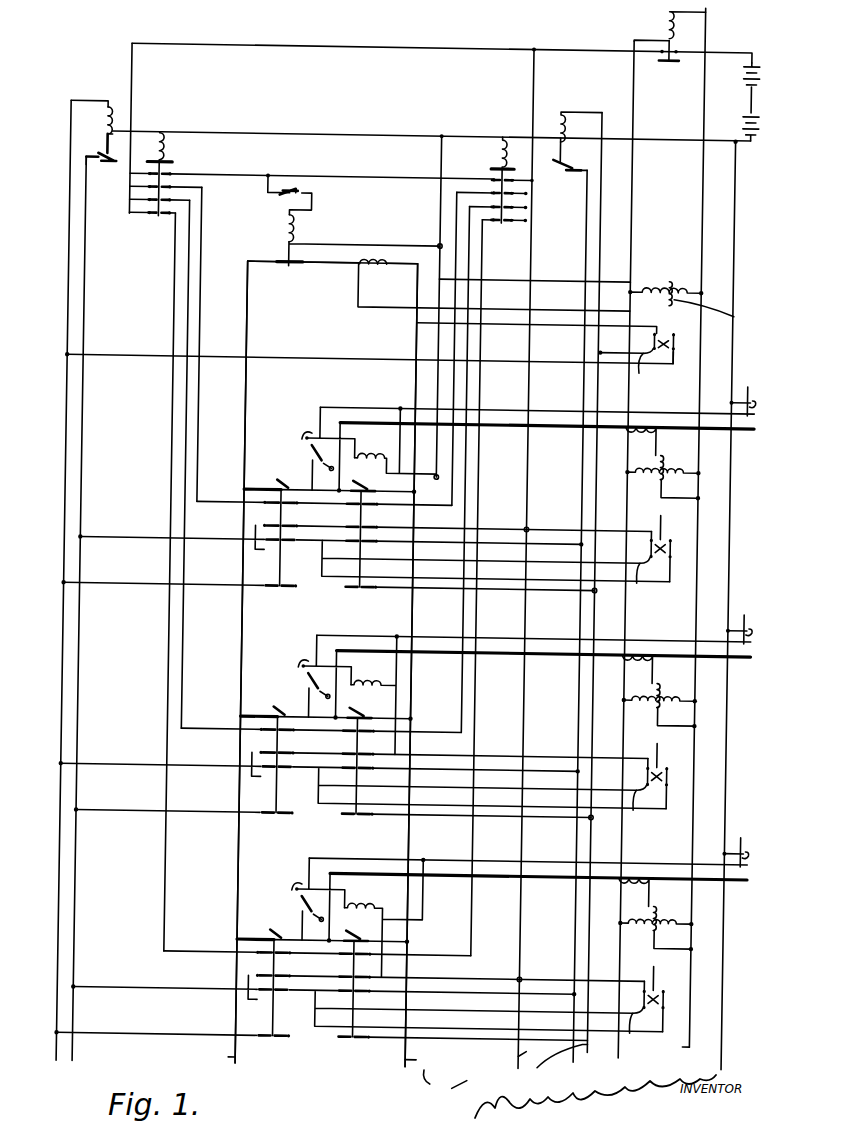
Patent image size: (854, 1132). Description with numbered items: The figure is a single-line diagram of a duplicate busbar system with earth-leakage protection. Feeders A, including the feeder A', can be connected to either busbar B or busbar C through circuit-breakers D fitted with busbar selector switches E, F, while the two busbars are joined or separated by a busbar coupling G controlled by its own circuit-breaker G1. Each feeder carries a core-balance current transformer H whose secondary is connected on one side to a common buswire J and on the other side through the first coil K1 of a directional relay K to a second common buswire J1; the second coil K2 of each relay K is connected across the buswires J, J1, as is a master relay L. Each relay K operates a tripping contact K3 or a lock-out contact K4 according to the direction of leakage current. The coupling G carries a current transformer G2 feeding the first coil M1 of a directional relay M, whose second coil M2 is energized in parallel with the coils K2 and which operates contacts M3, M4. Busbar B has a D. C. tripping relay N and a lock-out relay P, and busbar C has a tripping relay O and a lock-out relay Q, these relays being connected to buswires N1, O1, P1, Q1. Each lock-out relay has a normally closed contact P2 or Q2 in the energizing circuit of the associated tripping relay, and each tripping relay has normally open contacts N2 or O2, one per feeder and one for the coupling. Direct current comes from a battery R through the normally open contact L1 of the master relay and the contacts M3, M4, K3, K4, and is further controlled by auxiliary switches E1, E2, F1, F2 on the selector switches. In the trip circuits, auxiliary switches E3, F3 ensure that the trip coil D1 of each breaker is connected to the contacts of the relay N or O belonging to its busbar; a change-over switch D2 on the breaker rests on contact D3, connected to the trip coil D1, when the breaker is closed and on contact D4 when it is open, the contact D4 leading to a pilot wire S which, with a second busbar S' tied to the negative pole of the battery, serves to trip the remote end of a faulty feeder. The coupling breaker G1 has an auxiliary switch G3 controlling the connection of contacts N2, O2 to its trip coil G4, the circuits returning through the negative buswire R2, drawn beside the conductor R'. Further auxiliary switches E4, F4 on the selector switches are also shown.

The D. C. lock-out relay P is at (112, 115).
The buswire P1 is at (60, 1054).
The normally closed contact P2 is at (102, 170).
The D. C. tripping relay N is at (165, 140).
The buswire N1 is at (88, 1054).
The normally-open contacts N2 is at (168, 190).
The busbar coupling G is at (335, 266).
The busbar coupling circuit-breaker G1 is at (284, 268).
The earth-leakage current transformer G2 is at (375, 282).
The auxiliary switch G3 is at (284, 190).
The trip coil G4 is at (278, 232).
The D. C. tripping relay O is at (490, 154).
The buswire O1 is at (532, 1057).
The normally-open contacts O2 is at (509, 192).
The D. C. lock-out relay Q is at (553, 120).
The buswire Q1 is at (562, 1063).
The normally closed contact Q2 is at (568, 170).
The master relay L is at (656, 25).
The normally-open contact L1 is at (670, 63).
The battery R is at (761, 102).
The negative buswire R2 is at (434, 1084).
The conductor R' is at (468, 1082).
The directional relay M is at (666, 275).
The first coil M1 is at (668, 282).
The second coil M2 is at (720, 313).
The contact M3 is at (648, 371).
The contact M4 is at (672, 340).
The core-balance current transformer H is at (655, 422).
The pilot wire S is at (739, 617).
The second busbar S' is at (748, 623).
The feeder A is at (536, 544).
The feeder A' is at (530, 881).
The directional relay K is at (659, 689).
The first coil K1 is at (674, 690).
The second coil K2 is at (648, 471).
The tripping contact K3 is at (635, 807).
The lock-out contact K4 is at (672, 545).
The feeder circuit-breaker D is at (340, 440).
The trip coil D1 is at (390, 408).
The auxiliary change-over switch D2 is at (308, 452).
The contact D3 is at (302, 440).
The contact D4 is at (319, 698).
The busbar selector switch E is at (165, 470).
The auxiliary switch E1 is at (270, 560).
The auxiliary switch E2 is at (288, 592).
The auxiliary switch E3 is at (262, 507).
The auxiliary switch E4 is at (262, 543).
The busbar selector switch F is at (366, 486).
The auxiliary switch F1 is at (372, 548).
The auxiliary switch F2 is at (360, 591).
The auxiliary switch F3 is at (378, 509).
The auxiliary switch F4 is at (378, 531).
The busbar B is at (240, 1058).
The busbar C is at (425, 1060).
The buswire J is at (618, 1058).
The buswire J1 is at (694, 1044).